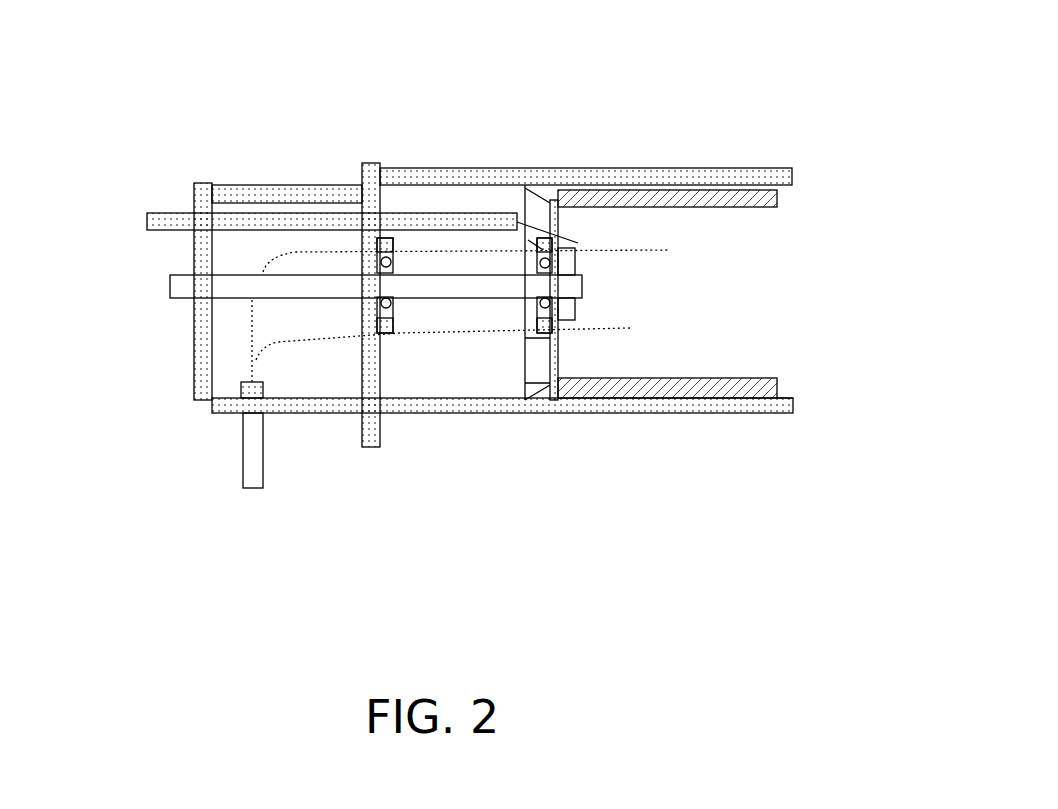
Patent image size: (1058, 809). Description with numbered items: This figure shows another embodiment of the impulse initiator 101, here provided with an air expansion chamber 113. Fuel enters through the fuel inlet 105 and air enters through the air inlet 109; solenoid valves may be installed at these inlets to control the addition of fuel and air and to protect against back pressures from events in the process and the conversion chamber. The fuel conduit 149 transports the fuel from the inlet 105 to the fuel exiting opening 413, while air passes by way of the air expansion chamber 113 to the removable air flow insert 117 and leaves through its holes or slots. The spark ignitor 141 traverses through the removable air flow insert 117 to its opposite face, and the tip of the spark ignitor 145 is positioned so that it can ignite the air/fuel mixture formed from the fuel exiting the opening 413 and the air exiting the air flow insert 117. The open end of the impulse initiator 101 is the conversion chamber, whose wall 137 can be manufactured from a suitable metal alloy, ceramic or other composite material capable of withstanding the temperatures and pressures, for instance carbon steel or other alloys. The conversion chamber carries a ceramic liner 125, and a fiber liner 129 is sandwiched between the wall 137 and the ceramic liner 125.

The impulse initiator 101 is at (755, 40).
The fuel inlet 105 is at (170, 287).
The air inlet 109 is at (254, 490).
The air expansion chamber 113 is at (272, 323).
The removable air flow insert 117 is at (452, 265).
The ceramic liner 125 is at (777, 378).
The fiber liner 129 is at (863, 460).
The wall 137 is at (469, 413).
The spark ignitor 141 is at (147, 221).
The tip of the spark ignitor 145 is at (575, 240).
The fuel conduit 149 is at (287, 268).
The fuel exiting opening 413 is at (582, 287).